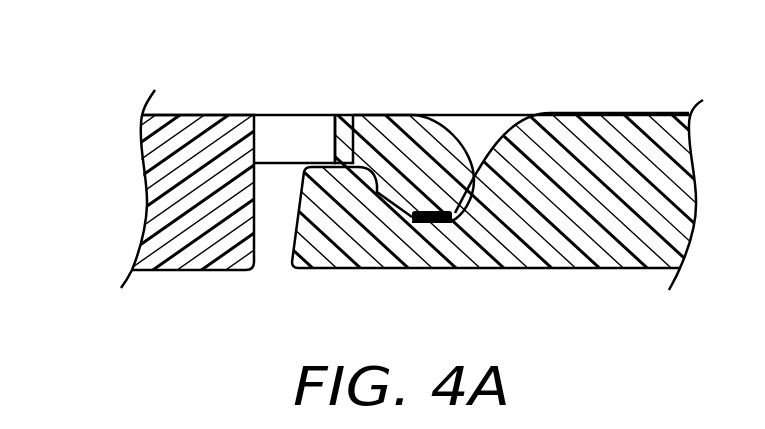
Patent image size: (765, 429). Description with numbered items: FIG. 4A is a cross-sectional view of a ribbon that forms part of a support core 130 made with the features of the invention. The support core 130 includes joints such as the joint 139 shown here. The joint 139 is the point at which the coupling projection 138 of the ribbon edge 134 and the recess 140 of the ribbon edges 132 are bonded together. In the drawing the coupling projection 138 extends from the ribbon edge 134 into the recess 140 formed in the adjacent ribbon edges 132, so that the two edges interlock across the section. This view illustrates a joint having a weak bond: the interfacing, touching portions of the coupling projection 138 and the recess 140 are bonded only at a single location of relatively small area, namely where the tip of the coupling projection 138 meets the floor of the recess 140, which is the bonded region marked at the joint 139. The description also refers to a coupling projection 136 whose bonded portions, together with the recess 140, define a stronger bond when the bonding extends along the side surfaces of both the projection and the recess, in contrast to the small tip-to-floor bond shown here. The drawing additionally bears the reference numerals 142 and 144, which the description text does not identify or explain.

The support core 130 is at (165, 73).
The ribbon edges 132 is at (302, 268).
The ribbon edge 134 is at (478, 190).
The coupling projection 136 is at (336, 140).
The coupling projection 138 is at (447, 178).
The joint 139 is at (437, 222).
The recess 140 is at (416, 211).
The first body block 142 is at (258, 242).
The recess 144 is at (280, 142).